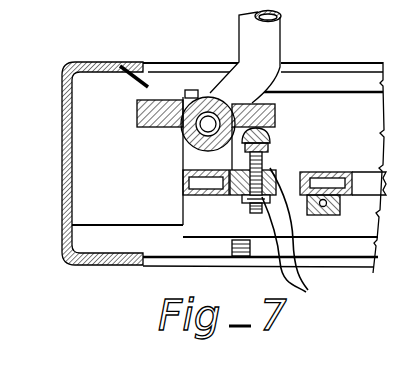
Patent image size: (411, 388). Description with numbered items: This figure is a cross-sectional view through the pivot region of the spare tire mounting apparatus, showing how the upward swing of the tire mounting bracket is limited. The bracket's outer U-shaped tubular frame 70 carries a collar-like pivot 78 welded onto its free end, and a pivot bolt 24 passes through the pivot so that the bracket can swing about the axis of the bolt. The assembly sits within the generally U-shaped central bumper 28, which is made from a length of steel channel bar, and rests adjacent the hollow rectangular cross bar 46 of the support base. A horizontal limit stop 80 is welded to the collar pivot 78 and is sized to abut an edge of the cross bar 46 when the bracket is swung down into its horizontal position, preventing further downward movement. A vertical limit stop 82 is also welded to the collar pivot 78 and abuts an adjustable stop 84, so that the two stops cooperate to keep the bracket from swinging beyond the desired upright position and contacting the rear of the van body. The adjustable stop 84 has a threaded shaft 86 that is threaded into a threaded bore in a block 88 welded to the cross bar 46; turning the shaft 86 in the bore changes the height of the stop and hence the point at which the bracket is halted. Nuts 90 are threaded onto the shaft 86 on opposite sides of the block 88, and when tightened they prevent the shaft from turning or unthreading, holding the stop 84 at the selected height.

The pivot bolt 24 is at (204, 128).
The central bumper 28 is at (62, 162).
The cross bar 46 is at (183, 182).
The outer tubular frame 70 is at (262, 47).
The collar-like pivot 78 is at (197, 113).
The horizontal limit stop 80 is at (137, 117).
The vertical limit stop 82 is at (276, 116).
The adjustable stop 84 is at (272, 138).
The threaded shaft 86 is at (262, 160).
The block 88 is at (242, 193).
The nuts 90 is at (299, 238).